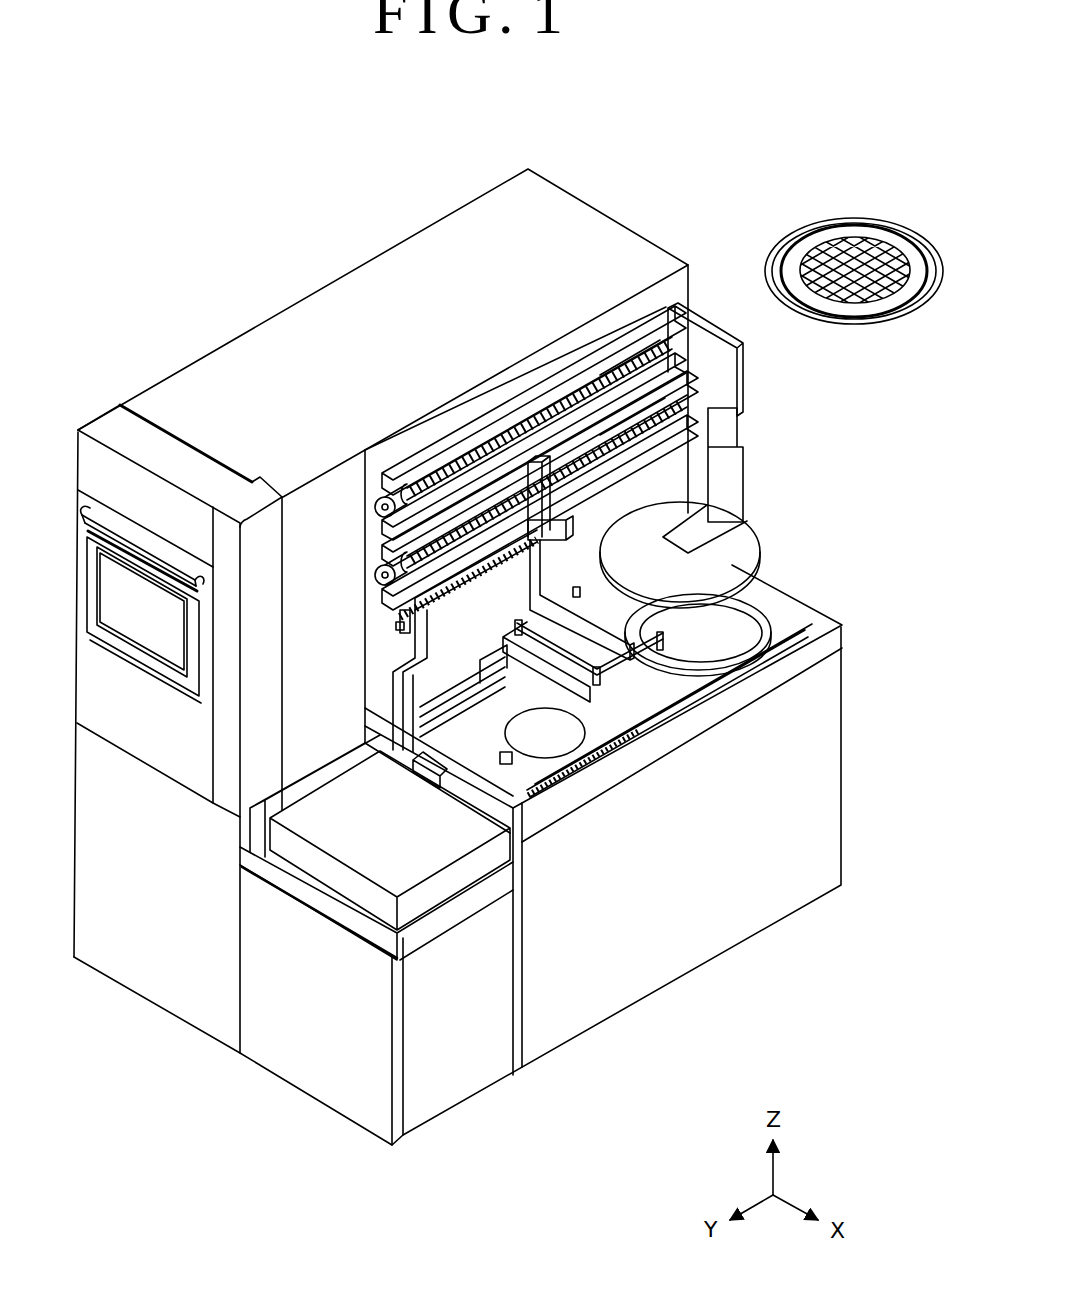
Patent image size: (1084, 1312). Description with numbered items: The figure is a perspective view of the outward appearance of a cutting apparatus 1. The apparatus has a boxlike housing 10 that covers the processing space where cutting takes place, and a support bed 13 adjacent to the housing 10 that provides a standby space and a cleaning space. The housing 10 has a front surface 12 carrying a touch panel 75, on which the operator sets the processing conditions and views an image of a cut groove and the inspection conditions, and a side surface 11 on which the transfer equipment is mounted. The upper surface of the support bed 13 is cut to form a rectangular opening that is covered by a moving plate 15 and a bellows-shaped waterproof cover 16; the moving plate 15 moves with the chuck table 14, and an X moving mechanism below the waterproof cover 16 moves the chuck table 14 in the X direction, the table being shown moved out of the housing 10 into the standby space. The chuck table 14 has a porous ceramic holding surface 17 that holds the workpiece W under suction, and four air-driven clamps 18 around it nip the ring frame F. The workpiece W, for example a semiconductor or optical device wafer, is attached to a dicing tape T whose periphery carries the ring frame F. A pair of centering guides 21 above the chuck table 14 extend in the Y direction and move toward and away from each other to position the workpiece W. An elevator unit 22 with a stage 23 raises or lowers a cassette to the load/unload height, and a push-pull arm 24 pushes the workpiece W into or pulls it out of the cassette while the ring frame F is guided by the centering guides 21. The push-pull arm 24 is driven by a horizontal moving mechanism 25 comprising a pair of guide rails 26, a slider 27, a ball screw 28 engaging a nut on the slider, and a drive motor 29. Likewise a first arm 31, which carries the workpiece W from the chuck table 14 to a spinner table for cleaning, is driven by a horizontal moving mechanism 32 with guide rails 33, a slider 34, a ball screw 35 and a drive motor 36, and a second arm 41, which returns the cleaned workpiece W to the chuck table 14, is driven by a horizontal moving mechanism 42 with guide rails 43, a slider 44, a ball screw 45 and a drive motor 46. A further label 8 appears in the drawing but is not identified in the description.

The cutting apparatus 1 is at (658, 190).
The chuck table 8 is at (740, 617).
The housing 10 is at (560, 207).
The side surface 11 is at (577, 338).
The front surface 12 is at (95, 466).
The support bed 13 is at (810, 620).
The chuck table 14 is at (558, 687).
The moving plate 15 is at (610, 735).
The waterproof cover 16 is at (513, 685).
The holding surface 17 is at (563, 727).
The clamps 18 is at (507, 758).
The centering guides 21 is at (472, 686).
The elevator unit 22 is at (313, 763).
The stage 23 is at (353, 785).
The push-pull arm 24 is at (415, 785).
The horizontal moving mechanism 25 is at (390, 620).
The guide rails 26 is at (472, 582).
The slider 27 is at (403, 682).
The ball screw 28 is at (495, 572).
The drive motor 29 is at (397, 625).
The first arm 31 is at (555, 588).
The horizontal moving mechanism 32 is at (361, 542).
The guide rails 33 is at (567, 529).
The slider 34 is at (543, 457).
The ball screw 35 is at (460, 520).
The drive motor 36 is at (376, 577).
The second arm 41 is at (745, 485).
The horizontal moving mechanism 42 is at (361, 468).
The guide rails 43 is at (622, 402).
The slider 44 is at (707, 325).
The ball screw 45 is at (502, 432).
The drive motor 46 is at (376, 507).
The touch panel 75 is at (112, 582).
The ring frame F is at (775, 257).
The dicing tape T is at (922, 265).
The workpiece W is at (886, 243).